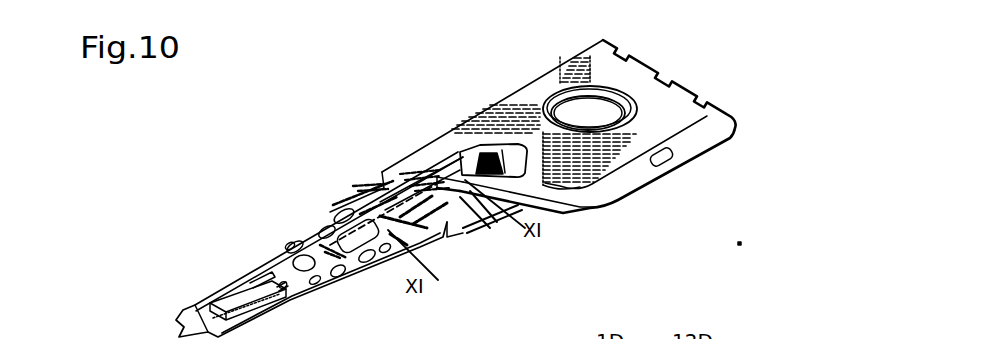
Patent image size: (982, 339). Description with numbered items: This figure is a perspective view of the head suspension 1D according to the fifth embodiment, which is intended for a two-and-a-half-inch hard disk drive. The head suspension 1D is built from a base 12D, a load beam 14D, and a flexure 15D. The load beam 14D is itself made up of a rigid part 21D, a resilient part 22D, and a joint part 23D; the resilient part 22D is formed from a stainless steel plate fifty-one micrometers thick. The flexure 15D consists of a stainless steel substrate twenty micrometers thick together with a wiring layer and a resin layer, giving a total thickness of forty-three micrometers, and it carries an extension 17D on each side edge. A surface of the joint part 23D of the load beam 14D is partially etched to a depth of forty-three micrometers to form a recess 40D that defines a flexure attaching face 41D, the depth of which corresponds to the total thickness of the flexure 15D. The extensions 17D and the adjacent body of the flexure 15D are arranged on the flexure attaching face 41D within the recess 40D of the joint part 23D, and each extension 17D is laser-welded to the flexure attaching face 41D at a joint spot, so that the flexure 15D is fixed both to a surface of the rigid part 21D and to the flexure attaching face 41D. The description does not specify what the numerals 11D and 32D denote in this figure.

The head suspension 1D is at (437, 112).
The slider mounting tongue 11D is at (233, 300).
The base 12D is at (503, 88).
The load beam 14D is at (293, 233).
The flexure 15D is at (552, 213).
The extension 17D is at (445, 172).
The rigid part 21D is at (333, 217).
The resilient part 22D is at (380, 160).
The joint part 23D is at (408, 153).
The spring portion 32D is at (480, 202).
The recess 40D is at (523, 122).
The flexure attaching face 41D is at (463, 145).